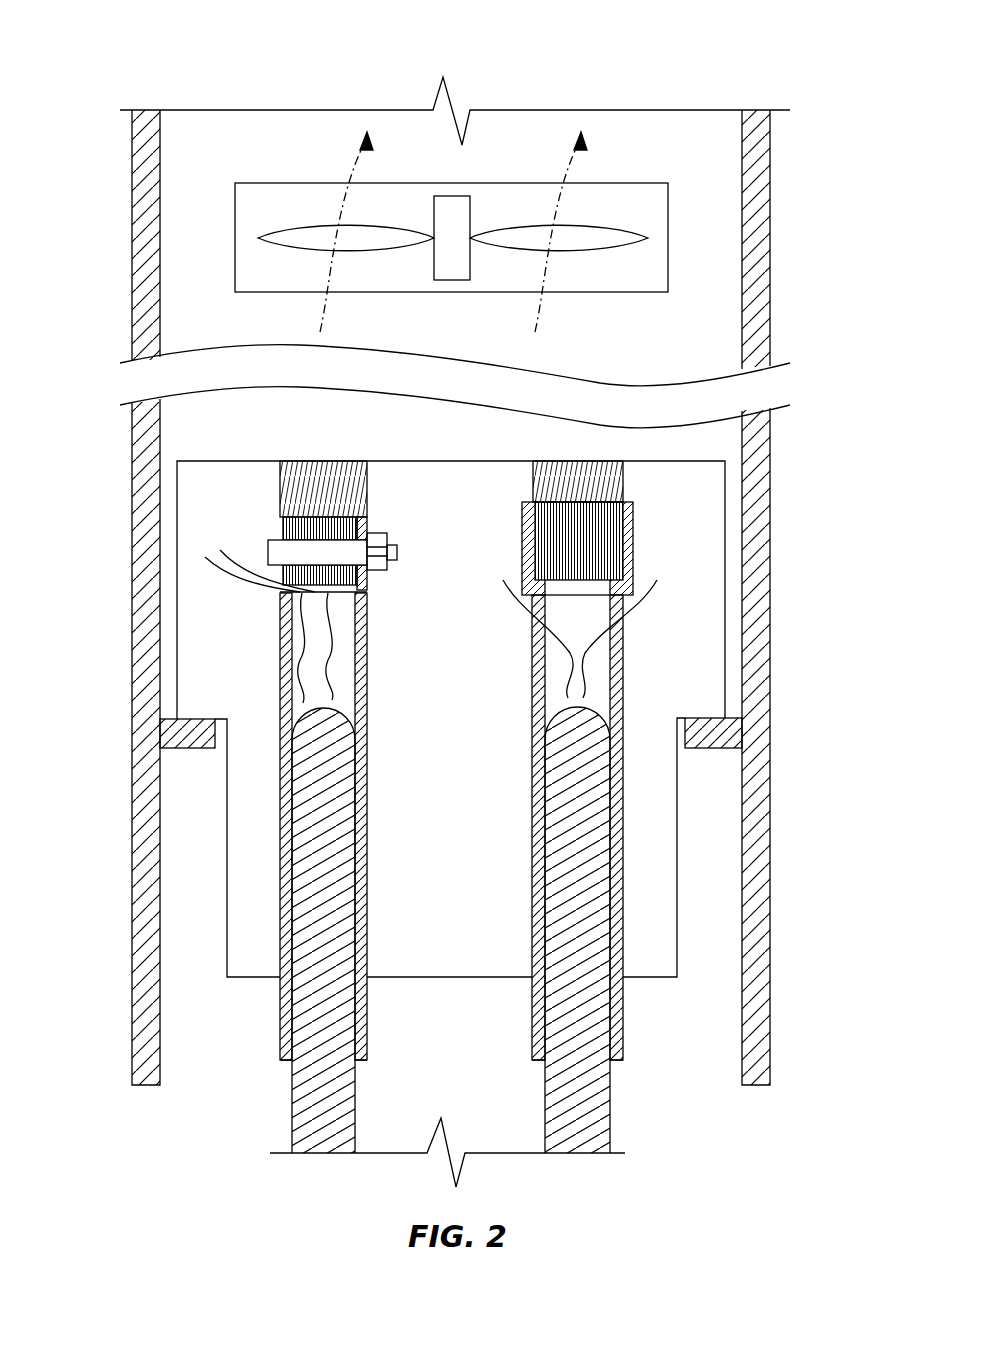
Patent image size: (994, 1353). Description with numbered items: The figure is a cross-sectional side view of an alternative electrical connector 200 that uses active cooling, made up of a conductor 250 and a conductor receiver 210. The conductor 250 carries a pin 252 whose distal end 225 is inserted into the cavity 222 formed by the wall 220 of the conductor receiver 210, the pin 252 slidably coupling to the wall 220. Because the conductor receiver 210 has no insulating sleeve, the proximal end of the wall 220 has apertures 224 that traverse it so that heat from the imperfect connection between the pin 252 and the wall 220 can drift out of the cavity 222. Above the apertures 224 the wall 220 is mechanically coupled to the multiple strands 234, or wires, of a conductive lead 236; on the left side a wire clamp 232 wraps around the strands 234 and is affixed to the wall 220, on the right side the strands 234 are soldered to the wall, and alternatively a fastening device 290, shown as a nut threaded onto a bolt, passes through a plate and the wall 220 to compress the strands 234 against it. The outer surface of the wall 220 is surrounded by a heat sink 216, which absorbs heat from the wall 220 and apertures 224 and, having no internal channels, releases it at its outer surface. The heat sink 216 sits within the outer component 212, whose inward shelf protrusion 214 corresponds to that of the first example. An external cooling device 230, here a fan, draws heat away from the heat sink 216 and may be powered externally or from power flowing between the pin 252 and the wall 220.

The electrical connector 200 is at (140, 50).
The conductor receiver 210 is at (292, 432).
The outer component 212 is at (150, 535).
The flange 214 is at (195, 737).
The heat sink 216 is at (232, 695).
The wall 220 is at (283, 1060).
The cavity 222 is at (322, 673).
The apertures 224 is at (270, 593).
The rounded end 225 is at (322, 710).
The cooling device 230 is at (235, 238).
The wire clamp 232 is at (268, 547).
The strands 234 is at (283, 522).
The conductive lead 236 is at (367, 488).
The conductor 250 is at (296, 1178).
The pin 252 is at (339, 895).
The fastening device 290 is at (397, 553).